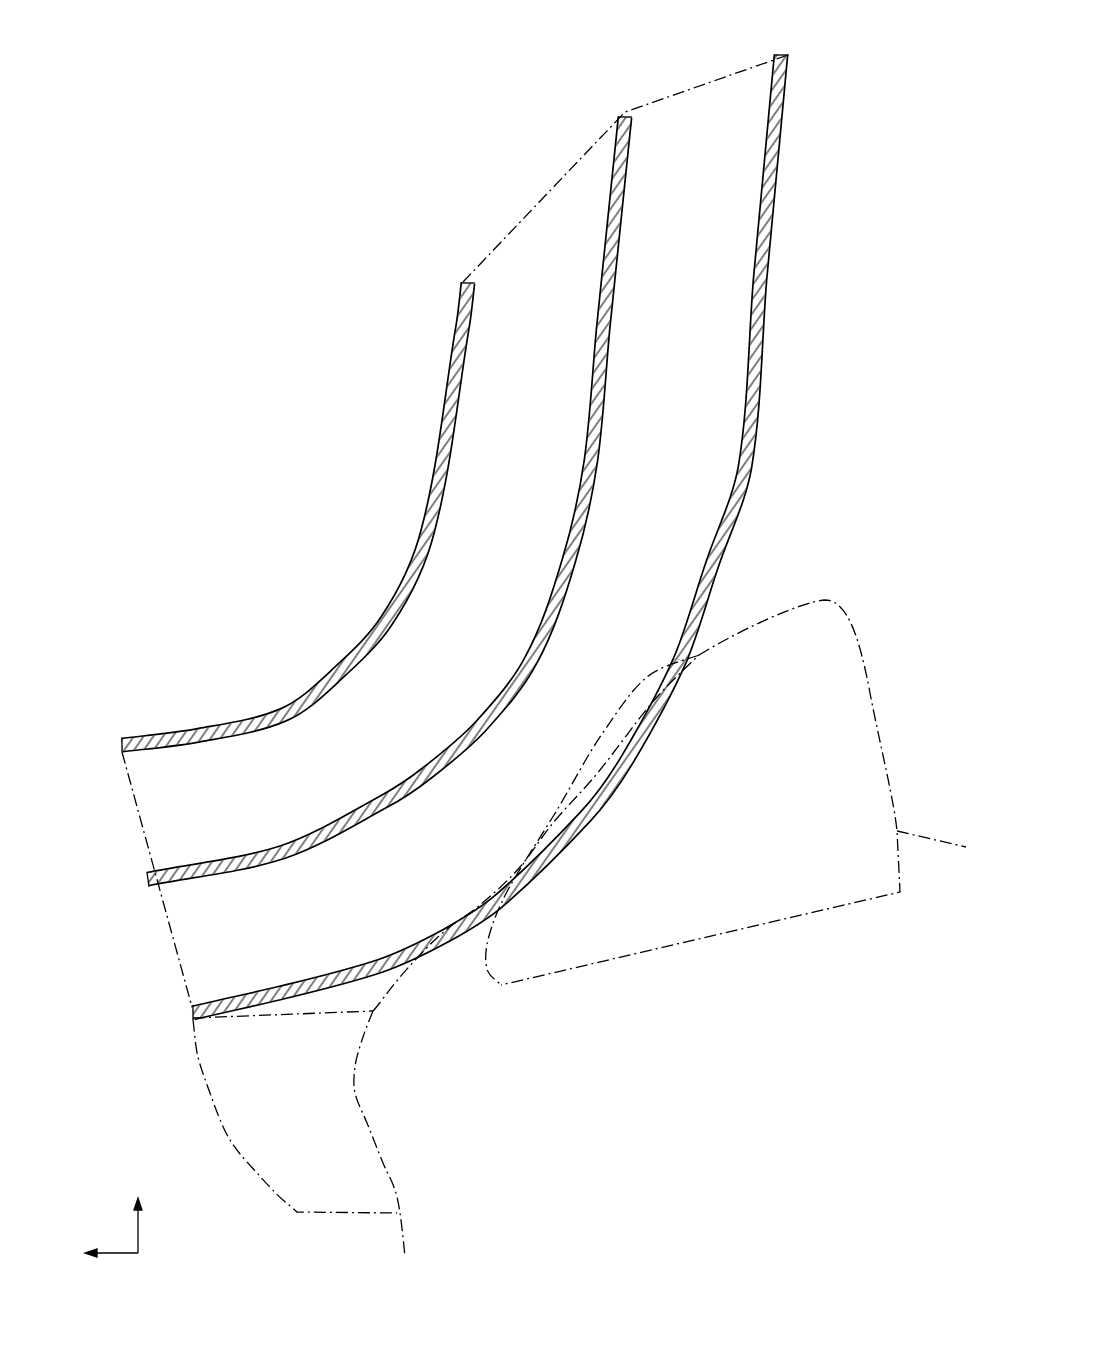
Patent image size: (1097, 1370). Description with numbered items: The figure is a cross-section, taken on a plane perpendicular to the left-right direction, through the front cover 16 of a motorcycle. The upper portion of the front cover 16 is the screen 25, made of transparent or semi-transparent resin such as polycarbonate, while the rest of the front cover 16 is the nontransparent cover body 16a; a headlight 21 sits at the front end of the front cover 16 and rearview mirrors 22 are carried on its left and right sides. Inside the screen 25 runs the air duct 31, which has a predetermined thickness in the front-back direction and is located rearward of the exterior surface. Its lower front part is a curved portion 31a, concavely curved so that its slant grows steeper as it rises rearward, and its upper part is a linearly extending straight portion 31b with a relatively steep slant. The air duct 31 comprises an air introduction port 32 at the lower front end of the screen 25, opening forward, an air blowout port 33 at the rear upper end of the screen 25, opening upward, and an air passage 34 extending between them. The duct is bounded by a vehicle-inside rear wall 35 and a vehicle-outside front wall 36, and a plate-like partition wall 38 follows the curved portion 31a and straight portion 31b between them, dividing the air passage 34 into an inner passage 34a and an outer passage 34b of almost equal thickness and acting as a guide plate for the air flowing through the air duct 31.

The front cover 16 is at (509, 657).
The cover body 16a is at (384, 1180).
The headlight 21 is at (217, 1080).
The rearview mirror 22 is at (786, 902).
The screen 25 is at (262, 272).
The air duct 31 is at (569, 569).
The curved portion 31a is at (446, 960).
The straight portion 31b is at (768, 258).
The air introduction port 32 is at (183, 937).
The air blowout port 33 is at (693, 102).
The air passage 34 is at (428, 137).
The inner passage 34a is at (690, 247).
The outer passage 34b is at (560, 355).
The rear wall 35 is at (744, 468).
The front wall 36 is at (425, 530).
The partition wall 38 is at (597, 463).